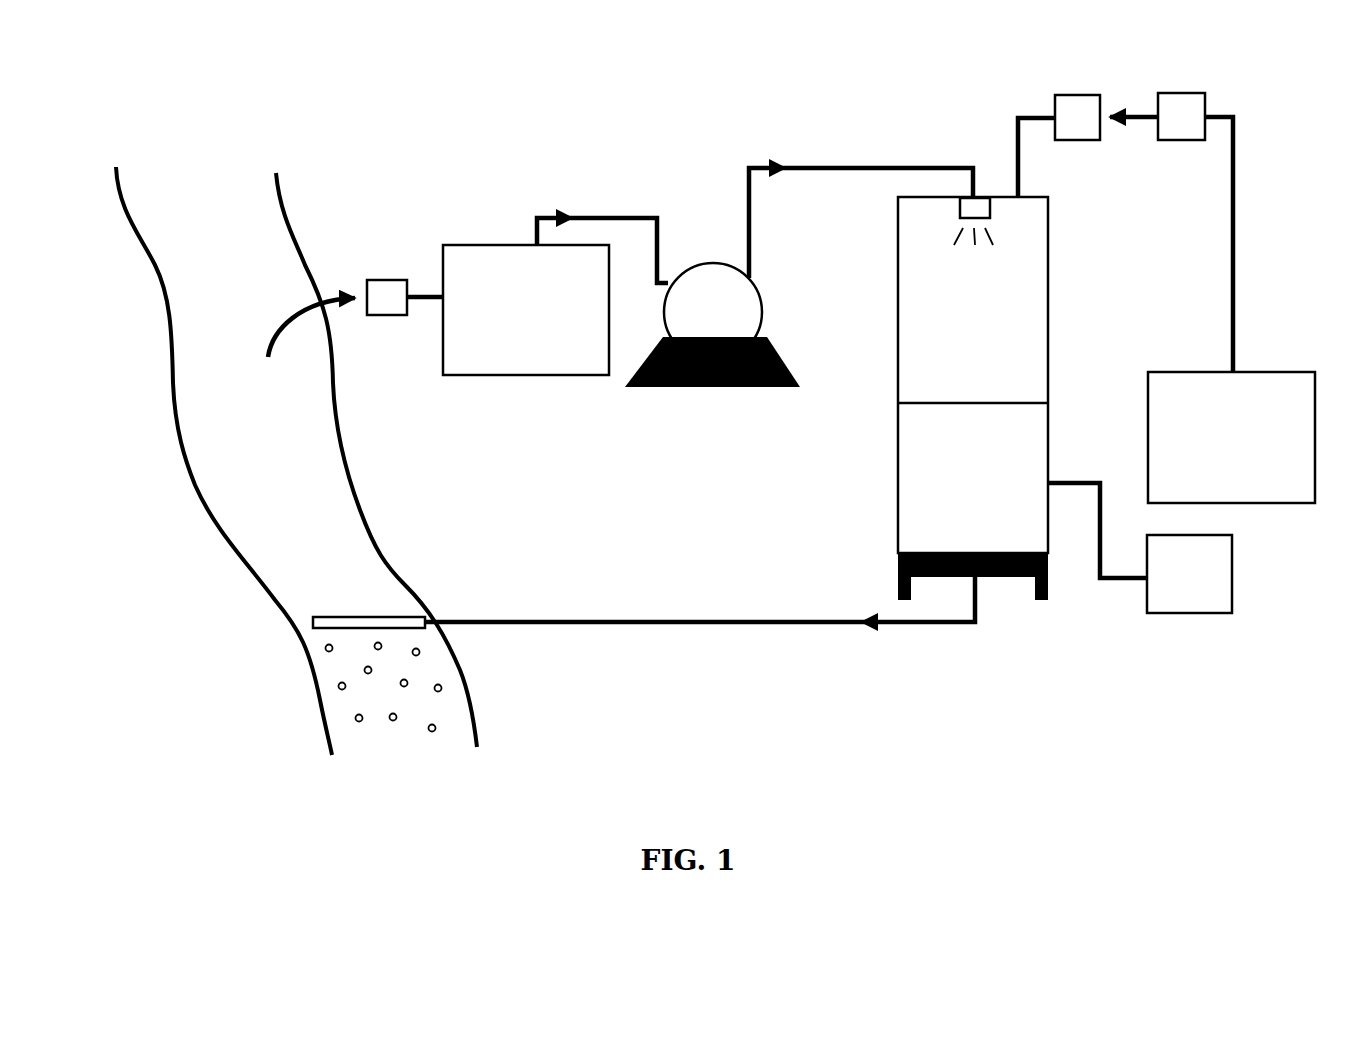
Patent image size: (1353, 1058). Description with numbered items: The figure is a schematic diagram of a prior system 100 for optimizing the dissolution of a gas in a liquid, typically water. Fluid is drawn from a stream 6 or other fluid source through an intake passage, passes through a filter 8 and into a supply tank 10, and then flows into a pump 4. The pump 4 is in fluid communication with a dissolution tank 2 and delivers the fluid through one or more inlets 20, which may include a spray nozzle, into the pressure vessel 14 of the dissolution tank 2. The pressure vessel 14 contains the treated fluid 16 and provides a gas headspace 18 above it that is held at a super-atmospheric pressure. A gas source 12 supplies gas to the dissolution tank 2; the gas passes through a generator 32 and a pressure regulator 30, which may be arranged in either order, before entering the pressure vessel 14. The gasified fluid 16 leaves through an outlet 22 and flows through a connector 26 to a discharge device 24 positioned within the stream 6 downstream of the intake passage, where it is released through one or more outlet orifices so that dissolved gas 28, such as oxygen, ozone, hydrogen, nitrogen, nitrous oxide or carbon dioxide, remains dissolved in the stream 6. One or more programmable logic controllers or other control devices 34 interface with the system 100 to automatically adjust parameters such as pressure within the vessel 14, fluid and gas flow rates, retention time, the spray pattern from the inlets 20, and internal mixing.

The system 100 is at (827, 117).
The dissolution tank 2 is at (979, 343).
The pump 4 is at (708, 397).
The stream 6 is at (312, 540).
The filter 8 is at (355, 318).
The supply tank 10 is at (555, 296).
The gas source 12 is at (1231, 310).
The pressure vessel 14 is at (893, 392).
The treated fluid 16 is at (973, 478).
The gas headspace 18 is at (973, 300).
The inlet 20 is at (978, 207).
The outlet 22 is at (980, 578).
The discharge device 24 is at (363, 615).
The connector 26 is at (637, 633).
The dissolved gas 28 is at (393, 723).
The pressure regulator 30 is at (1059, 146).
The generator 32 is at (1157, 116).
The control device 34 is at (1140, 548).